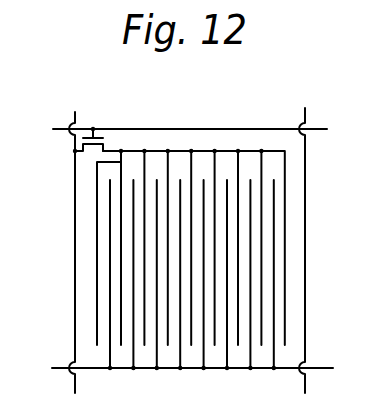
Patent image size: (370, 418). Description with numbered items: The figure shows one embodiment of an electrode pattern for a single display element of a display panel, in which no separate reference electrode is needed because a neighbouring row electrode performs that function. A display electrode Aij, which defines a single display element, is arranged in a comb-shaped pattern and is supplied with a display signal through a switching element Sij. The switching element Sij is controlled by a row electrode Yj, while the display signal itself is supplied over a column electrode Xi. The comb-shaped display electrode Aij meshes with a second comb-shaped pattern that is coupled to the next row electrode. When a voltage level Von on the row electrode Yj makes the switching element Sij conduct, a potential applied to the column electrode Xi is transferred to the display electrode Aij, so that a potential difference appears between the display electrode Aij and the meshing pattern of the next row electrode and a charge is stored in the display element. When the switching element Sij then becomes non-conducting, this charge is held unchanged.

The column electrode Xi is at (75, 114).
The row electrode Yj is at (56, 130).
The switching element Sij is at (107, 141).
The display electrode Aij is at (285, 248).